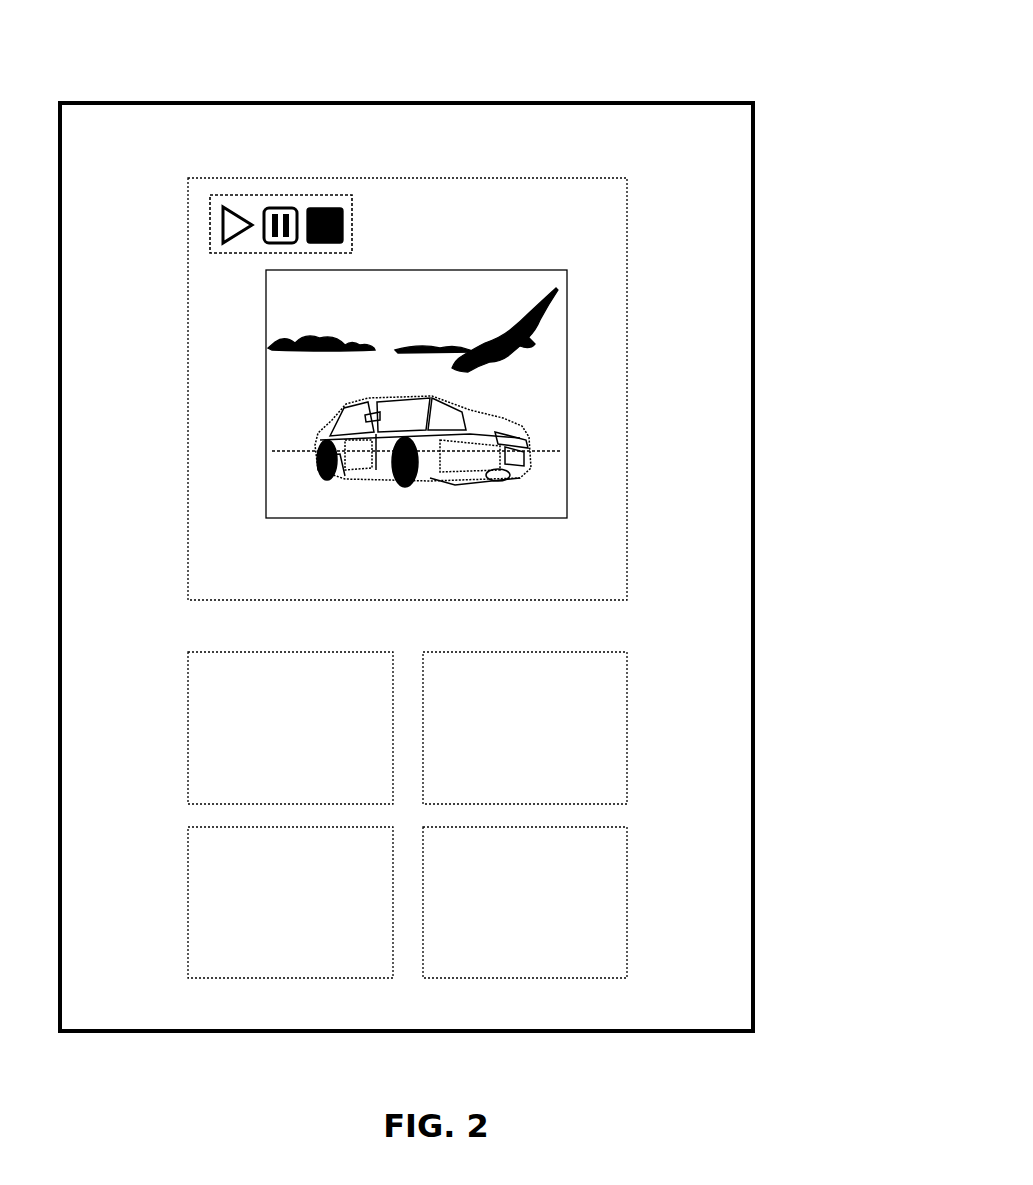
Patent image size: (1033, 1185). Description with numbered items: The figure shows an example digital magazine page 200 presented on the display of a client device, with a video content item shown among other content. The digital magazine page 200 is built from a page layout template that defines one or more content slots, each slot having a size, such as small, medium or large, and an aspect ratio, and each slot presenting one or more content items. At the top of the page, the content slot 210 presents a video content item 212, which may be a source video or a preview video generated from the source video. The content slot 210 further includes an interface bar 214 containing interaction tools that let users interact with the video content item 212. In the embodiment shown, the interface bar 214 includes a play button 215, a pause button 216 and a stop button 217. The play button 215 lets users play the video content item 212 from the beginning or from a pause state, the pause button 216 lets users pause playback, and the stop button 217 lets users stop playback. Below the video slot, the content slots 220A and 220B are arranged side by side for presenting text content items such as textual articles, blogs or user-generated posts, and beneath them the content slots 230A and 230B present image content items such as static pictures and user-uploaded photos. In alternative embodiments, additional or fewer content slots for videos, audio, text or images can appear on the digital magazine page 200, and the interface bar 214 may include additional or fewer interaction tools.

The digital magazine page 200 is at (495, 99).
The content slot 210 is at (630, 386).
The video content item 212 is at (416, 431).
The interface bar 214 is at (357, 226).
The play button 215 is at (221, 204).
The pause button 216 is at (279, 204).
The stop button 217 is at (339, 204).
The content slot 220A is at (290, 728).
The content slot 220B is at (525, 728).
The content slot 230A is at (290, 902).
The content slot 230B is at (525, 902).